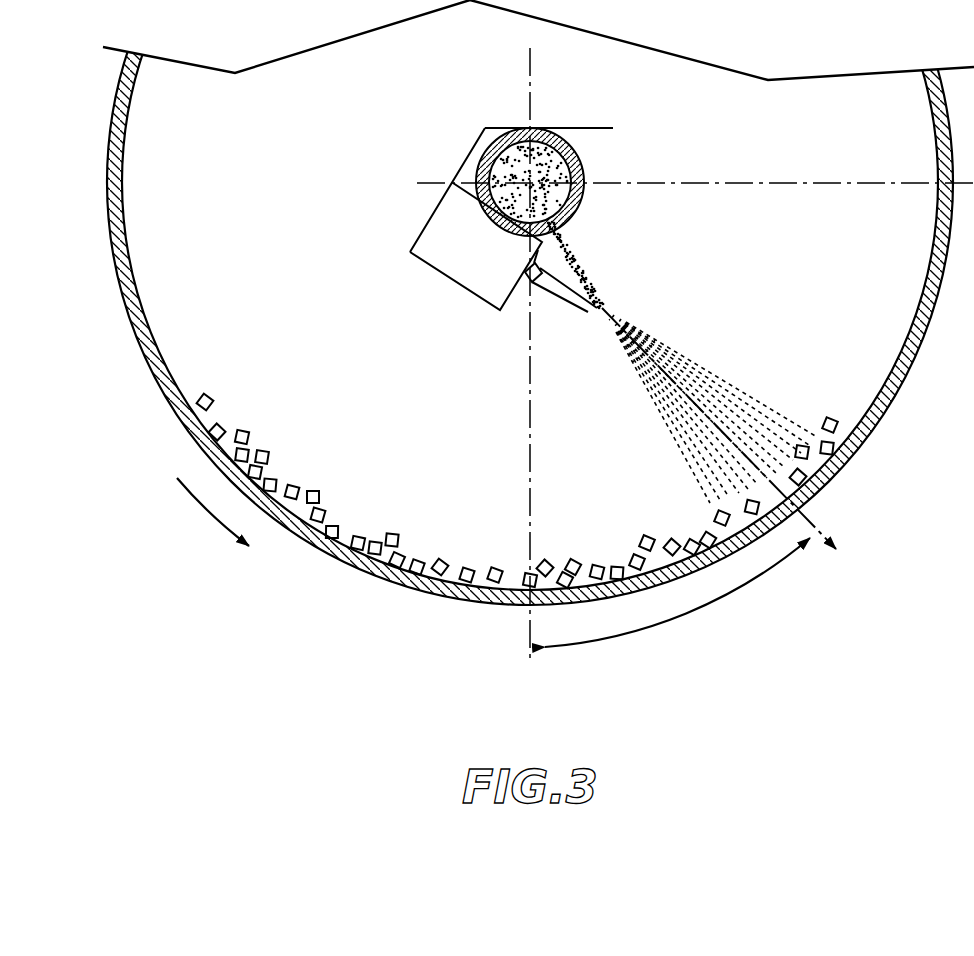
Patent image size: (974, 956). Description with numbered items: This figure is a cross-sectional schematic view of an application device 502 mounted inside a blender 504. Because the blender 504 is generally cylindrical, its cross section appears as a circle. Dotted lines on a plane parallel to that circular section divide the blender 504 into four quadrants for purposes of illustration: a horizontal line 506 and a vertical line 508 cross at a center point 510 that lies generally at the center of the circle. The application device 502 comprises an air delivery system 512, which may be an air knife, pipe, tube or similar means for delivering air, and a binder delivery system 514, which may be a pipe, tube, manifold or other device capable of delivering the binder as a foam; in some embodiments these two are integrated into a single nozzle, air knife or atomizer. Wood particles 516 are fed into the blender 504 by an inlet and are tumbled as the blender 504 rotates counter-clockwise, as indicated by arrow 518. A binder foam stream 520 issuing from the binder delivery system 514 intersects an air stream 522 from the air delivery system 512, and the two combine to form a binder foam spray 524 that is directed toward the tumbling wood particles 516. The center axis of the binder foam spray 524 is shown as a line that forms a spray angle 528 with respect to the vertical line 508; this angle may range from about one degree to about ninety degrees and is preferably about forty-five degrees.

The application device 502 is at (491, 72).
The blender 504 is at (364, 574).
The horizontal line 506 is at (721, 182).
The vertical line 508 is at (528, 618).
The center point 510 is at (562, 176).
The air delivery system 512 is at (466, 272).
The binder delivery system 514 is at (580, 188).
The wood particles 516 is at (642, 542).
The arrow 518 is at (208, 508).
The binder foam stream 520 is at (580, 270).
The air stream 522 is at (561, 297).
The binder foam spray 524 is at (722, 383).
The spray angle 528 is at (686, 617).